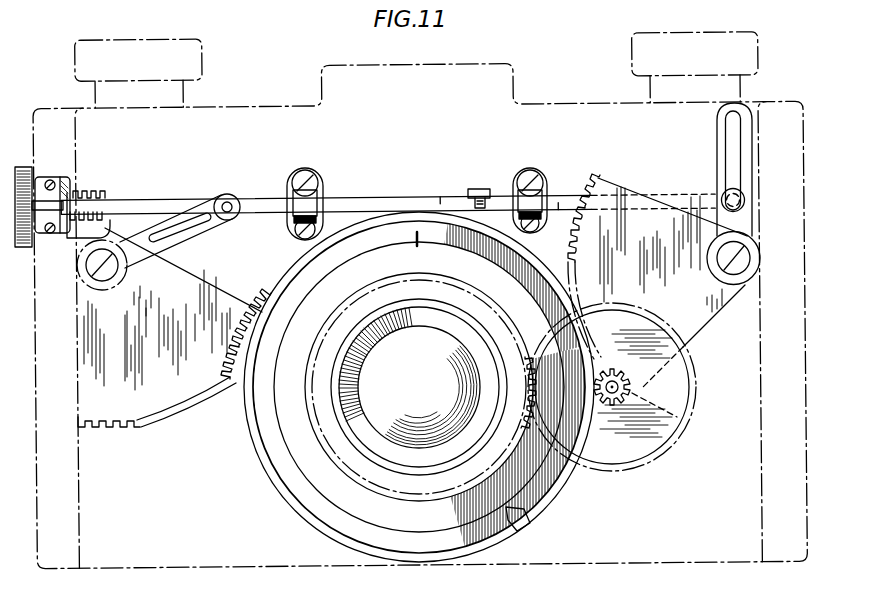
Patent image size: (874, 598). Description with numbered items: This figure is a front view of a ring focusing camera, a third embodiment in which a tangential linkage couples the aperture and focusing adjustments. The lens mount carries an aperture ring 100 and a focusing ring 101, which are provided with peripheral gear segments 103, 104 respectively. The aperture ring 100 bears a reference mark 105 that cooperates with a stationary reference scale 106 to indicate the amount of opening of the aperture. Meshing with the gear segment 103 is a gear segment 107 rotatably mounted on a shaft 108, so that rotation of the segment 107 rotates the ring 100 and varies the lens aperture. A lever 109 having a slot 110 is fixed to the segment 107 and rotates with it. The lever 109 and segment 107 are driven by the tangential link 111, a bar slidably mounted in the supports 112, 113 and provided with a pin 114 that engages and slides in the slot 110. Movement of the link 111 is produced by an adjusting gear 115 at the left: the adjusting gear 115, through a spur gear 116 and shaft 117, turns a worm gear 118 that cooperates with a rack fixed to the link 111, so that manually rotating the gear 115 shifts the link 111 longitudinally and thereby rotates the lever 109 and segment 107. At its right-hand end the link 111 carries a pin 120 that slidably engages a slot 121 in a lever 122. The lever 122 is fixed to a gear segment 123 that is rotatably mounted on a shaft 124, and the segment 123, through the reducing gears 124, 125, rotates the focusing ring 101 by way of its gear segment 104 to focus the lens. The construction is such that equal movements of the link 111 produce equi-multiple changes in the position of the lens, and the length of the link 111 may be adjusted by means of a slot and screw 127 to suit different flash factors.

The aperture ring 100 is at (263, 425).
The focusing ring 101 is at (515, 455).
The peripheral gear segment 103 is at (233, 380).
The peripheral gear segment 104 is at (505, 444).
The reference mark 105 is at (531, 524).
The stationary reference scale 106 is at (433, 528).
The gear segment 107 is at (117, 424).
The shaft 108 is at (90, 266).
The lever 109 is at (137, 235).
The slot 110 is at (165, 232).
The tangential link 111 is at (349, 198).
The support 112 is at (318, 188).
The support 113 is at (538, 188).
The pin 114 is at (227, 201).
The adjusting gear 115 is at (27, 172).
The spur gear 116 is at (34, 188).
The shaft 117 is at (55, 206).
The worm gear 118 is at (79, 192).
The pin 120 is at (745, 199).
The slot 121 is at (740, 161).
The lever 122 is at (717, 161).
The gear segment 123 is at (707, 314).
The shaft 124 is at (751, 258).
The reducing gear 125 is at (687, 395).
The screw 127 is at (477, 190).